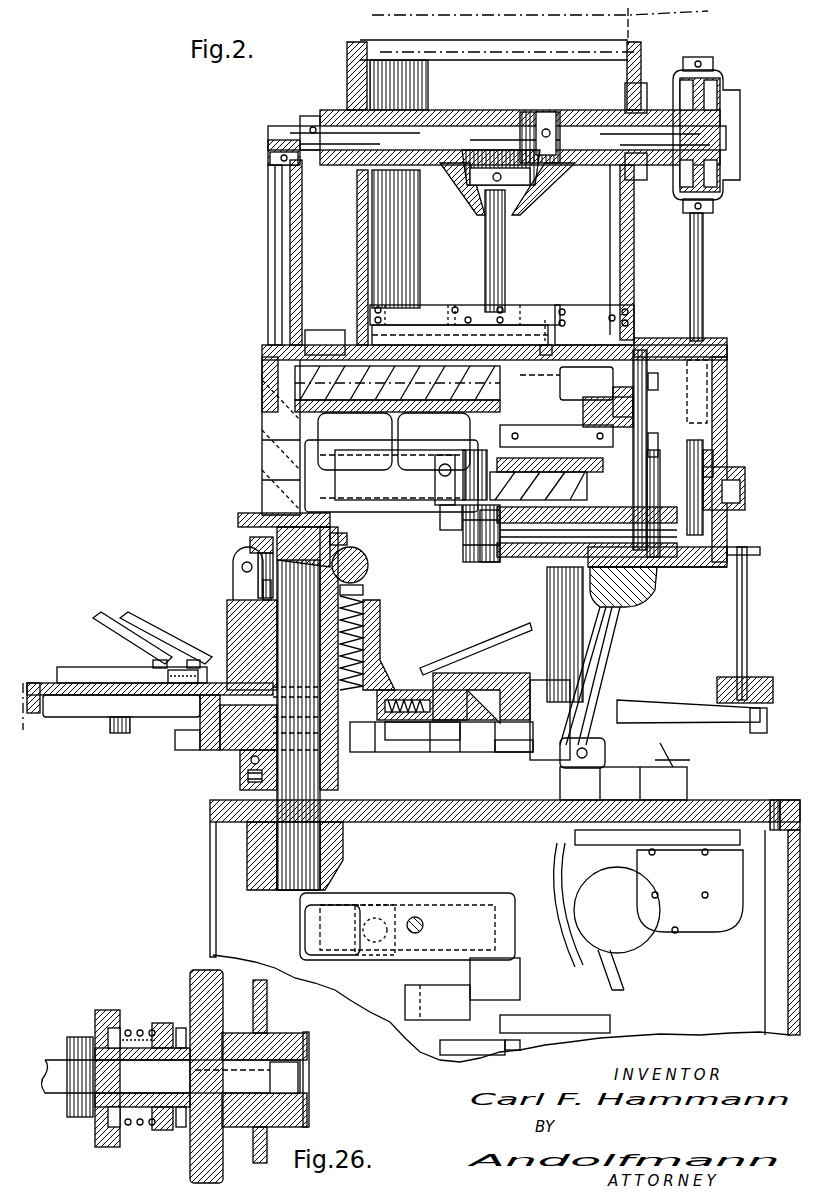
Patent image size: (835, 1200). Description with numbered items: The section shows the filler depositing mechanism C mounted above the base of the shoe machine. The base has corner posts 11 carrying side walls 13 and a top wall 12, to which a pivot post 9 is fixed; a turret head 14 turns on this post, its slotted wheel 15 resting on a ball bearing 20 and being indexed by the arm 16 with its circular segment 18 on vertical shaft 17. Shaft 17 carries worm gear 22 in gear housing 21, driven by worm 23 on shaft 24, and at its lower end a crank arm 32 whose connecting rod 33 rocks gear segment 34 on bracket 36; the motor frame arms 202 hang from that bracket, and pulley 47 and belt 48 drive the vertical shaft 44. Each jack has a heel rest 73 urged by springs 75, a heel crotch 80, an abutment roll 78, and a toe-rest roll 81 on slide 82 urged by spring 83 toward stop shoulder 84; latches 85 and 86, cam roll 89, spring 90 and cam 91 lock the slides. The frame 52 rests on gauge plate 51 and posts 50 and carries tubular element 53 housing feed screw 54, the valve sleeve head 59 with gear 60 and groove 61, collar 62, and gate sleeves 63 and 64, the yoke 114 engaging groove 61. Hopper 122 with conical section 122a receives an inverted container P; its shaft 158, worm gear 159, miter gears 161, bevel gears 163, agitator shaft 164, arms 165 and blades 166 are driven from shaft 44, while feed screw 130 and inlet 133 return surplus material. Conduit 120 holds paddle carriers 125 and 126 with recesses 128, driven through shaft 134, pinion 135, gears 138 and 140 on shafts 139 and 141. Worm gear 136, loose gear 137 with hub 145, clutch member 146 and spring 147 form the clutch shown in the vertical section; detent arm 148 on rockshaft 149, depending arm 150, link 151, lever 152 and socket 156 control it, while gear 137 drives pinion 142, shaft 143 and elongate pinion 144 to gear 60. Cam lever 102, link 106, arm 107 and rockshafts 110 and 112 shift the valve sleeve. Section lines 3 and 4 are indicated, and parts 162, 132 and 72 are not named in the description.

In FIG. 2, the cylindrical container P is at (547, 26).
In FIG. 2, the conical section 122a is at (497, 38).
In FIG. 2, the hopper 122 is at (347, 50).
In FIG. 2, the horizontal transverse shaft 158 is at (594, 130).
In FIG. 2, the bevel gears 163 is at (530, 130).
In FIG. 2, the vertical shaft 164 is at (482, 210).
In FIG. 2, the worm gear 159 is at (728, 98).
In FIG. 2, the vertical shaft 44 is at (705, 222).
In FIG. 2, the miter gears 161 is at (282, 140).
In FIG. 2, the filler depositing mechanism C is at (249, 162).
In FIG. 2, the wall 162 is at (275, 240).
In FIG. 2, the scraper blade 166 is at (365, 228).
In FIG. 2, the inlet 133 is at (410, 345).
In FIG. 2, the radial arms 165 is at (455, 312).
In FIG. 2, the conduit 120 is at (546, 350).
In FIG. 2, the recesses 128 is at (556, 320).
In FIG. 2, the paddle-carrier 125 is at (570, 370).
In FIG. 2, the pocket 132 is at (340, 358).
In FIG. 2, the frame 52 is at (262, 367).
In FIG. 26, the frame 52 is at (285, 1040).
In FIG. 2, the feed screw 130 is at (296, 398).
In FIG. 2, the opening 72 is at (350, 452).
In FIG. 2, the yoke 114 is at (428, 460).
In FIG. 2, the head 59 is at (466, 450).
In FIG. 2, the tubular frame element 53 is at (458, 470).
In FIG. 2, the gate sleeve 64 is at (405, 468).
In FIG. 2, the gate sleeve 63 is at (335, 483).
In FIG. 2, the collar 62 is at (300, 485).
In FIG. 2, the shaft 134 is at (548, 470).
In FIG. 26, the shaft 134 is at (171, 1076).
In FIG. 2, the paddle-carrier 126 is at (572, 468).
In FIG. 2, the gear 140 is at (643, 385).
In FIG. 2, the shaft 141 is at (648, 388).
In FIG. 2, the gear 138 is at (636, 415).
In FIG. 2, the shaft 139 is at (648, 432).
In FIG. 2, the clutch member 146 is at (663, 470).
In FIG. 26, the clutch member 146 is at (160, 1025).
In FIG. 2, the worm gear 136 is at (720, 465).
In FIG. 26, the worm gear 136 is at (212, 995).
In FIG. 2, the cam detent arm 148 is at (690, 545).
In FIG. 2, the rockshaft 149 is at (705, 560).
In FIG. 2, the depending arm 150 is at (749, 604).
In FIG. 2, the feed screw 54 is at (537, 558).
In FIG. 2, the horizontal shaft 143 is at (512, 560).
In FIG. 2, the elongate pinion 144 is at (488, 565).
In FIG. 2, the gear 60 is at (470, 548).
In FIG. 2, the circumferential groove 61 is at (445, 530).
In FIG. 2, the posts 50 is at (560, 603).
In FIG. 2, the second rockshaft 112 is at (618, 607).
In FIG. 2, the pinion 142 is at (650, 595).
In FIG. 2, the rockshaft 110 is at (627, 676).
In FIG. 2, the arm 107 is at (636, 640).
In FIG. 2, the link 106 is at (578, 735).
In FIG. 2, the gauge plate 51 is at (240, 518).
In FIG. 2, the roll 81 is at (236, 566).
In FIG. 2, the slide 82 is at (240, 590).
In FIG. 2, the stop shoulder 84 is at (378, 605).
In FIG. 2, the coiled spring 83 is at (382, 628).
In FIG. 2, the latch 85 is at (388, 692).
In FIG. 2, the spring 90 is at (420, 690).
In FIG. 2, the heel rest 73 is at (500, 690).
In FIG. 2, the latch 86 is at (478, 672).
In FIG. 2, the springs 75 is at (185, 670).
In FIG. 2, the heel-receiving crotch 80 is at (108, 622).
In FIG. 2, the turret head 14 is at (87, 705).
In FIG. 2, the abutment roll 78 is at (116, 700).
In FIG. 2, the section line 3 is at (36, 745).
In FIG. 2, the slotted wheel 15 is at (190, 750).
In FIG. 2, the cam 91 is at (250, 760).
In FIG. 2, the ball bearing 20 is at (250, 780).
In FIG. 2, the top wall 12 is at (225, 806).
In FIG. 2, the pivot post 9 is at (300, 840).
In FIG. 2, the side walls 13 is at (210, 866).
In FIG. 2, the section line 4 is at (450, 890).
In FIG. 2, the cam roll 89 is at (441, 752).
In FIG. 2, the circular segment 18 is at (442, 760).
In FIG. 2, the arm 16 is at (490, 772).
In FIG. 2, the cam lever 102 is at (618, 765).
In FIG. 2, the link 151 is at (768, 688).
In FIG. 2, the lever 152 is at (768, 718).
In FIG. 2, the socket 156 is at (690, 782).
In FIG. 2, the corner posts 11 is at (775, 980).
In FIG. 2, the vertical shaft 17 is at (448, 880).
In FIG. 2, the horizontal shaft 24 is at (413, 917).
In FIG. 2, the gear housing 21 is at (312, 937).
In FIG. 2, the worm 23 is at (360, 948).
In FIG. 2, the worm gear 22 is at (485, 965).
In FIG. 2, the crank arm 32 is at (410, 998).
In FIG. 2, the connecting rod 33 is at (455, 1050).
In FIG. 2, the gear segment 34 is at (582, 1024).
In FIG. 2, the bracket 36 is at (630, 898).
In FIG. 2, the pulley 47 is at (617, 910).
In FIG. 2, the belt 48 is at (655, 958).
In FIG. 2, the arms 202 is at (615, 988).
In FIG. 26, the pinion 135 is at (80, 1040).
In FIG. 26, the spur gear 137 is at (106, 1010).
In FIG. 26, the coiled spring 147 is at (134, 1030).
In FIG. 26, the hub 145 is at (136, 1125).